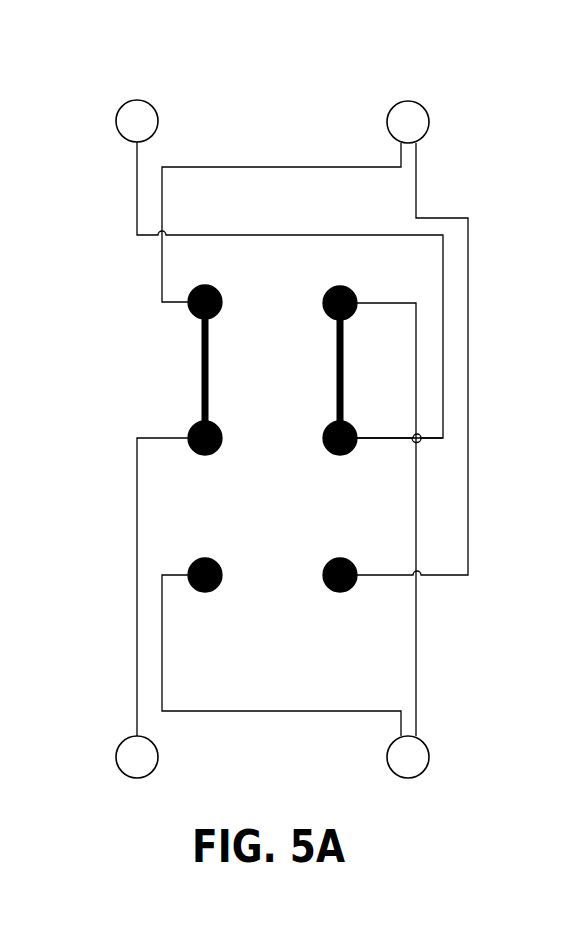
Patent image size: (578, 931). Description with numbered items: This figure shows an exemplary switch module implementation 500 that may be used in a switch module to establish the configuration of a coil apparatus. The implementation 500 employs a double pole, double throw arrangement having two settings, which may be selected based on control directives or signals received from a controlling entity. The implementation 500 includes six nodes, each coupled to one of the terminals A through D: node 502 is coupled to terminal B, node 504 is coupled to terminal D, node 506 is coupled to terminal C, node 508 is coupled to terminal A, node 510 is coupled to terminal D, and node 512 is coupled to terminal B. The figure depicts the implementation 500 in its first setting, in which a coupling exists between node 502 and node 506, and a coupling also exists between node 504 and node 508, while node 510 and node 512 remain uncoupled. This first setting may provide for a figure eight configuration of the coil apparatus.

The switch module implementation 500 is at (478, 72).
The node 502 is at (219, 291).
The node 504 is at (354, 291).
The node 506 is at (219, 427).
The node 508 is at (354, 427).
The node 510 is at (219, 563).
The node 512 is at (354, 563).